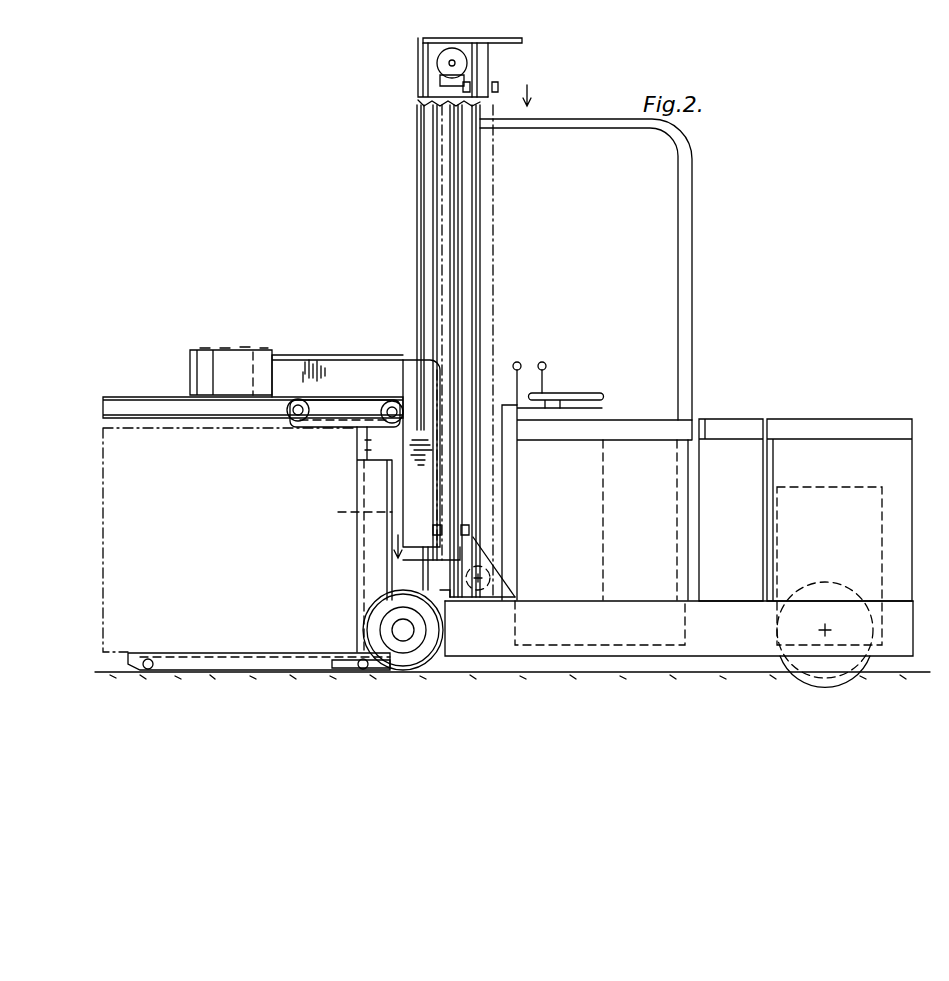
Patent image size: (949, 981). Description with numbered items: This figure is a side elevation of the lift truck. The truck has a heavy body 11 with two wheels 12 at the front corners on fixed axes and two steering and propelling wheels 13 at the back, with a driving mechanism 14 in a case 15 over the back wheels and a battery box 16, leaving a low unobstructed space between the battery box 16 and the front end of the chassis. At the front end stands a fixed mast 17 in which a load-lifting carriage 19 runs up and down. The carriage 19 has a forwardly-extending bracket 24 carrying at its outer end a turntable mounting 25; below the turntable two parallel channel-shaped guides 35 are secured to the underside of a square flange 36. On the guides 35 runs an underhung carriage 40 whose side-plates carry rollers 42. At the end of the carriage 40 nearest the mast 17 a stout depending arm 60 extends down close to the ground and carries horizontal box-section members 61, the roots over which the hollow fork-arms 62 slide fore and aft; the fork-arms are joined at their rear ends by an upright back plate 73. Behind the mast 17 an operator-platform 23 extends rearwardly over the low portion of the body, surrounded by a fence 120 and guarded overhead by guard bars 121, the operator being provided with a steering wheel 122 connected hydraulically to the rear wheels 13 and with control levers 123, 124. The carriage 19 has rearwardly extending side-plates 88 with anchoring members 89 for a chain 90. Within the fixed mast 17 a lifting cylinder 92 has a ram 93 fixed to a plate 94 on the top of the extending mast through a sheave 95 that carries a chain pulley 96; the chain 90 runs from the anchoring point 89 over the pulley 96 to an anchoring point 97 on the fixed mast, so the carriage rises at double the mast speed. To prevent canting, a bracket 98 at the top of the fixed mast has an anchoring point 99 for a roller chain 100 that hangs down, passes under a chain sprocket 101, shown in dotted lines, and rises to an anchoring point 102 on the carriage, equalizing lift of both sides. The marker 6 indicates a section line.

The section line indicator 6 is at (462, 321).
The body 11 is at (600, 623).
The wheels 12 is at (372, 612).
The steering and propelling wheels 13 is at (795, 637).
The driving mechanism 14 is at (805, 487).
The case 15 is at (829, 424).
The battery box 16 is at (731, 424).
The fixed mast 17 is at (478, 287).
The load-lifting carriage 19 is at (410, 362).
The operator-platform 23 is at (612, 603).
The forwardly-extending bracket 24 is at (300, 375).
The turntable mounting 25 is at (255, 355).
The channel-shaped guides 35 is at (142, 405).
The square flange 36 is at (192, 390).
The underhung carriage 40 is at (322, 416).
The rollers 42 is at (392, 405).
The depending arm 60 is at (372, 430).
The box-section members 61 is at (352, 662).
The fork-arm 62 is at (250, 665).
The back plate 73 is at (372, 540).
The side-plates 88 is at (423, 550).
The anchoring members 89 is at (349, 522).
The chain 90 is at (496, 259).
The lifting cylinder 92 is at (455, 214).
The ram 93 is at (440, 88).
The plate 94 is at (522, 40).
The sheave 95 is at (445, 64).
The chain pulley 96 is at (470, 70).
The anchoring point 97 is at (458, 94).
The bracket 98 is at (497, 86).
The anchoring point 99 is at (505, 92).
The roller chain 100 is at (498, 150).
The chain sprocket 101 is at (500, 580).
The anchoring point 102 is at (468, 530).
The fence 120 is at (620, 422).
The guard bars 121 is at (686, 212).
The steering wheel 122 is at (572, 392).
The control lever 123 is at (519, 362).
The control lever 124 is at (546, 362).